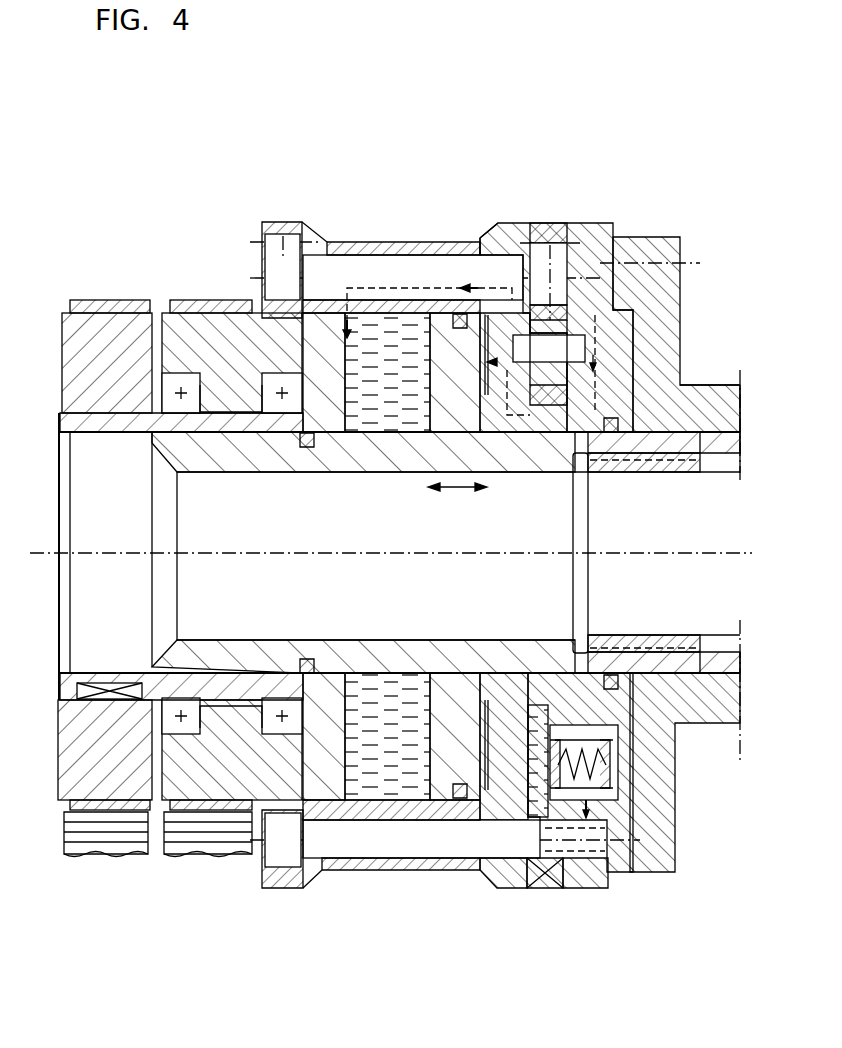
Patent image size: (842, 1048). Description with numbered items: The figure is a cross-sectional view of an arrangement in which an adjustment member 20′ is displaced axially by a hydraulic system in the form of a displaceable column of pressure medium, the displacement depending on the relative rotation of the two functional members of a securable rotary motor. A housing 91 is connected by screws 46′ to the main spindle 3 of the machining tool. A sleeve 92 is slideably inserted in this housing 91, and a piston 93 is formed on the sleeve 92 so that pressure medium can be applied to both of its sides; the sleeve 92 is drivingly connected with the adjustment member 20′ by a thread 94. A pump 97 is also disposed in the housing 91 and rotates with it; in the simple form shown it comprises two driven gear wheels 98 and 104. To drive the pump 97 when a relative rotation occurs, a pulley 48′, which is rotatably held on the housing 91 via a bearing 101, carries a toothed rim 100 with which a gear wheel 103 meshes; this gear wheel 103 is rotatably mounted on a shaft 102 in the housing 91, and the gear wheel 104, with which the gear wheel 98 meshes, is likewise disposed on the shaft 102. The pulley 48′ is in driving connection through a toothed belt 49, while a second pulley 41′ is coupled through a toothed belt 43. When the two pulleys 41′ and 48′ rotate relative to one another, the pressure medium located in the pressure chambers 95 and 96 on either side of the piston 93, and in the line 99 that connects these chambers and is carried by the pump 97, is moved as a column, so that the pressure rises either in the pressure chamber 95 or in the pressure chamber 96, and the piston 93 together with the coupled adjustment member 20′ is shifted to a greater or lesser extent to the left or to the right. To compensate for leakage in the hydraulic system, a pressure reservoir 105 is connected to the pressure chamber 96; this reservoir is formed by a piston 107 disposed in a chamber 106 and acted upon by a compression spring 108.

The main spindle 3 is at (690, 400).
The adjustment member 20′ is at (725, 382).
The pulley 41′ is at (115, 335).
The toothed belt 43 is at (60, 836).
The screws 46′ is at (647, 237).
The pulley 48′ is at (213, 333).
The toothed belt 49 is at (163, 832).
The housing 91 is at (378, 240).
The sleeve 92 is at (372, 453).
The piston 93 is at (455, 395).
The thread 94 is at (641, 478).
The pressure chamber 95 is at (360, 398).
The pressure chamber 96 is at (490, 392).
The pump 97 is at (553, 160).
The gear wheel 98 is at (588, 225).
The line 99 is at (405, 290).
The toothed rim 100 is at (262, 850).
The bearing 101 is at (193, 400).
The shaft 102 is at (342, 262).
The gear wheel 103 is at (285, 238).
The gear wheel 104 is at (553, 300).
The pressure reservoir 105 is at (587, 845).
The chamber 106 is at (483, 850).
The piston 107 is at (548, 853).
The compression spring 108 is at (632, 790).